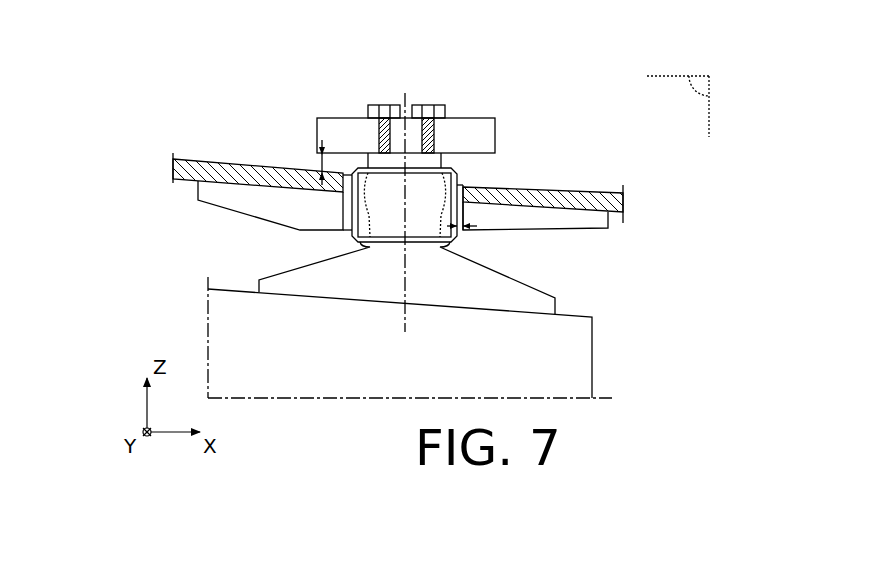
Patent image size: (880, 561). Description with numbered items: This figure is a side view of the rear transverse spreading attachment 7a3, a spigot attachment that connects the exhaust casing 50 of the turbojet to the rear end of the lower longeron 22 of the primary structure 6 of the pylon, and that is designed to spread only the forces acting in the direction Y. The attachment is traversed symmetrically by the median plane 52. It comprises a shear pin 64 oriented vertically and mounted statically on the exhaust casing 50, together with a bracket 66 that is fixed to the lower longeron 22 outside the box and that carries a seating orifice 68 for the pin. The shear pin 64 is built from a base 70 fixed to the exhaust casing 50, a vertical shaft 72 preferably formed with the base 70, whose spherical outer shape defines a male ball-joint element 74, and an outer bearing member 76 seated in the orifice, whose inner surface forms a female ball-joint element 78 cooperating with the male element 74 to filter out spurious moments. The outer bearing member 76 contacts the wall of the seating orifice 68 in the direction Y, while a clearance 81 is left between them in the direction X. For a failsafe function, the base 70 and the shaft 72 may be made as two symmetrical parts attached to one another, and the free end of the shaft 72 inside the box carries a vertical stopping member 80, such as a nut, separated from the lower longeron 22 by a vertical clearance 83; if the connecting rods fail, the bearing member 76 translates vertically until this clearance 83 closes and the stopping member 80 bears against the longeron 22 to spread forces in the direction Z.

The primary structure 6 is at (628, 213).
The lower longeron 22 is at (590, 191).
The exhaust casing 50 is at (578, 345).
The median plane 52 is at (702, 82).
The shear pin 64 is at (458, 184).
The bracket 66 is at (215, 186).
The seating orifice 68 is at (360, 173).
The base 70 is at (345, 280).
The vertical shaft 72 is at (437, 160).
The male ball-joint element 74 is at (367, 205).
The outer bearing member 76 is at (357, 200).
The female ball-joint element 78 is at (452, 191).
The vertical stopping member 80 is at (332, 123).
The clearance 81 is at (463, 223).
The vertical clearance 83 is at (320, 146).
The rear transverse spreading attachment 7a3 is at (537, 265).